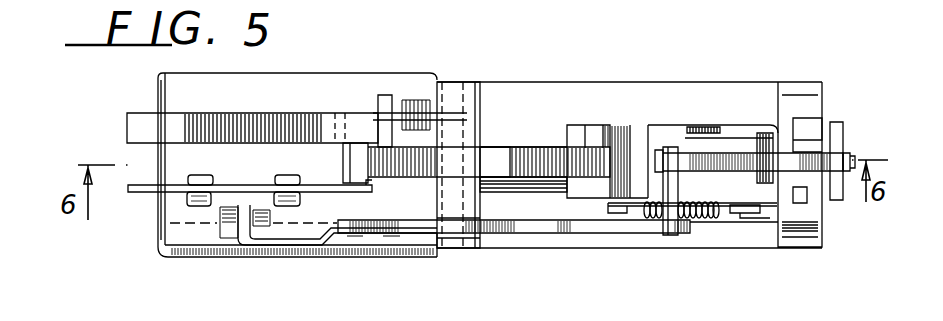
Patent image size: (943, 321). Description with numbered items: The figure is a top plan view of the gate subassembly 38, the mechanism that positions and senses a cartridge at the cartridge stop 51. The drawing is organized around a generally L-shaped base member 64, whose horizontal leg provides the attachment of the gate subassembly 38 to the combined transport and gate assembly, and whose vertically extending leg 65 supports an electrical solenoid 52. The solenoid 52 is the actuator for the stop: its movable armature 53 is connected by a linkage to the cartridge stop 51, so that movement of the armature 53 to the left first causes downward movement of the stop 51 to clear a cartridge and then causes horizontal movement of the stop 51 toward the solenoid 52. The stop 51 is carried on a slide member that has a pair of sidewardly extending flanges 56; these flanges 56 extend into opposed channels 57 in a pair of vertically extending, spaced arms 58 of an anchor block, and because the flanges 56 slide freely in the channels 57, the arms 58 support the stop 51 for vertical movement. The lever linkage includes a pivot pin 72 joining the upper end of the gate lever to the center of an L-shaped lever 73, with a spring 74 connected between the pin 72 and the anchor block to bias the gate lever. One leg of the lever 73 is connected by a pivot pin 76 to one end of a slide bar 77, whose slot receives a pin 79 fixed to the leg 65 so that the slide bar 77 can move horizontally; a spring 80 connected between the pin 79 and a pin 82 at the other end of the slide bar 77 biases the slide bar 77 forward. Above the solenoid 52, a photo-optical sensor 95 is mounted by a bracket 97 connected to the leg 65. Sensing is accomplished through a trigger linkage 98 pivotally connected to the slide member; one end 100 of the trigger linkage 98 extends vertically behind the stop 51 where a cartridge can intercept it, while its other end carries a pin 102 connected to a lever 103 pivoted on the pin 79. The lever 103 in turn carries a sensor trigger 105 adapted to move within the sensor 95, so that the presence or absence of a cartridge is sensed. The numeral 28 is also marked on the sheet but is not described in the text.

The electrical solenoid 52 is at (177, 243).
The armature 53 is at (517, 144).
The flanges 56 is at (805, 125).
The channels 57 is at (808, 202).
The arms 58 is at (800, 106).
The base member 64 is at (690, 85).
The vertically extending leg 65 is at (480, 258).
The pivot pin 72 is at (640, 220).
The L-shaped lever 73 is at (648, 135).
The spring 74 is at (700, 220).
The pivot pin 76 is at (587, 187).
The slide bar 77 is at (437, 162).
The pin 79 is at (463, 118).
The spring 80 is at (415, 118).
The pin 82 is at (378, 96).
The photo-optical sensor 95 is at (229, 238).
The bracket 97 is at (318, 186).
The trigger linkage 98 is at (740, 152).
The end of trigger linkage 100 is at (856, 150).
The pin 102 is at (677, 146).
The lever 103 is at (535, 234).
The sensor trigger 105 is at (285, 247).
The gate subassembly 38 is at (656, 50).
The cartridge stop 51 is at (843, 127).
The base 28 is at (648, 312).